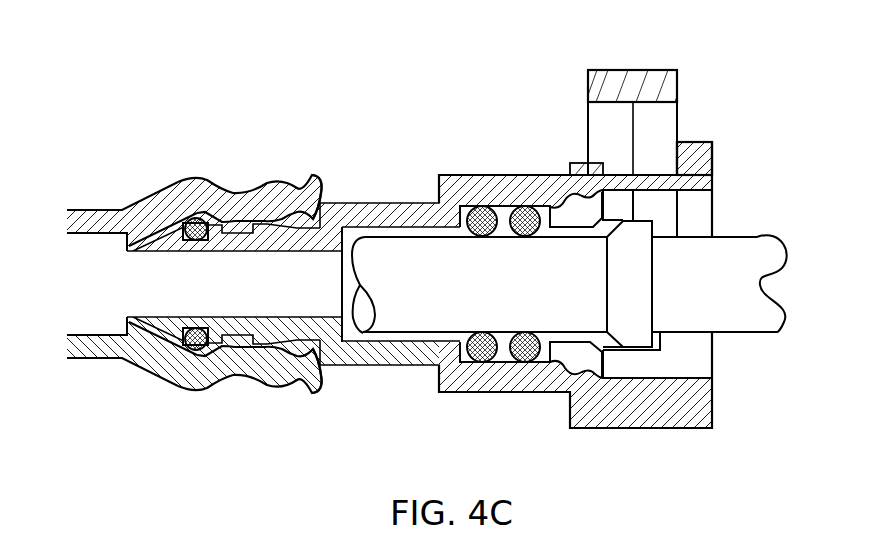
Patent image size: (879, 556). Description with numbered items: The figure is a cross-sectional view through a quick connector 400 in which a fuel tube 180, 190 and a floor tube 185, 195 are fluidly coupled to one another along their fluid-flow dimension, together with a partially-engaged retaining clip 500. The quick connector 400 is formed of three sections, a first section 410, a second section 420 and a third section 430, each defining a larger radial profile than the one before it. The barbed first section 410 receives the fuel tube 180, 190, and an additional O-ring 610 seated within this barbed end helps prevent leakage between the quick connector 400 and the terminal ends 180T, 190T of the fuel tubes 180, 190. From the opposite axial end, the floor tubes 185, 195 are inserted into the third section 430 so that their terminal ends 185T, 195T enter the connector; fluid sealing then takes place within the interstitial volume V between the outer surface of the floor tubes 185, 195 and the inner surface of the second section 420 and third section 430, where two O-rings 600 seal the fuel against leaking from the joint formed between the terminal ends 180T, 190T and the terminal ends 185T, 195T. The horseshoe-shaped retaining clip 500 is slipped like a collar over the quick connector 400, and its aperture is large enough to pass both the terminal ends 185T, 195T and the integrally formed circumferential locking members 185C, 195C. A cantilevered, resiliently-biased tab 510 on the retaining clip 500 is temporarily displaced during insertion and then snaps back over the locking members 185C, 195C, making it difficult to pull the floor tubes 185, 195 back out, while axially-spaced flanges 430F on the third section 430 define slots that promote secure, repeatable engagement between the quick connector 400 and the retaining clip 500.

The quick connector 400 is at (680, 67).
The first section 410 is at (172, 240).
The second section 420 is at (362, 212).
The third section 430 is at (490, 183).
The flanges 430F is at (570, 165).
The retaining clip 500 is at (677, 85).
The resiliently-biased tab 510 is at (660, 137).
The O-rings 600 is at (482, 357).
The additional O-ring 610 is at (196, 220).
The fuel tube 180 is at (251, 291).
The fuel tube 190 is at (103, 358).
The terminal end 180T is at (272, 268).
The terminal end 190T is at (316, 200).
The floor tube 185 is at (572, 342).
The floor tube 195 is at (572, 342).
The terminal end 185T is at (375, 319).
The terminal end 195T is at (362, 322).
The circumferential locking member 185C is at (611, 342).
The circumferential locking member 195C is at (623, 341).
The interstitial volume V is at (402, 232).